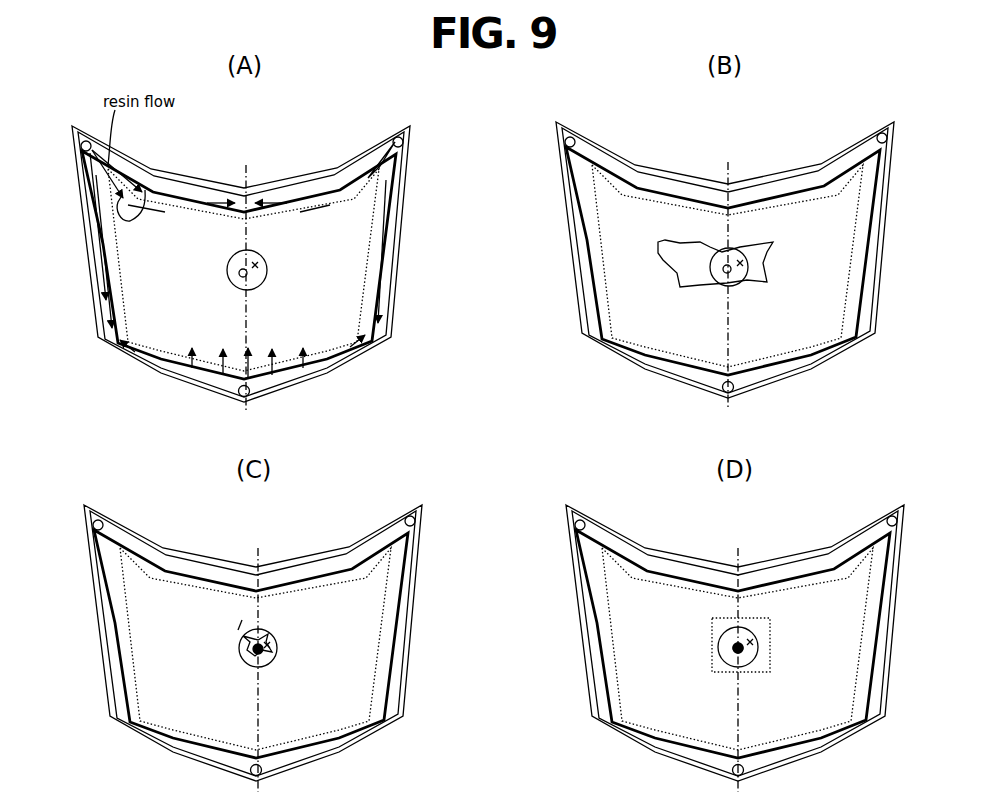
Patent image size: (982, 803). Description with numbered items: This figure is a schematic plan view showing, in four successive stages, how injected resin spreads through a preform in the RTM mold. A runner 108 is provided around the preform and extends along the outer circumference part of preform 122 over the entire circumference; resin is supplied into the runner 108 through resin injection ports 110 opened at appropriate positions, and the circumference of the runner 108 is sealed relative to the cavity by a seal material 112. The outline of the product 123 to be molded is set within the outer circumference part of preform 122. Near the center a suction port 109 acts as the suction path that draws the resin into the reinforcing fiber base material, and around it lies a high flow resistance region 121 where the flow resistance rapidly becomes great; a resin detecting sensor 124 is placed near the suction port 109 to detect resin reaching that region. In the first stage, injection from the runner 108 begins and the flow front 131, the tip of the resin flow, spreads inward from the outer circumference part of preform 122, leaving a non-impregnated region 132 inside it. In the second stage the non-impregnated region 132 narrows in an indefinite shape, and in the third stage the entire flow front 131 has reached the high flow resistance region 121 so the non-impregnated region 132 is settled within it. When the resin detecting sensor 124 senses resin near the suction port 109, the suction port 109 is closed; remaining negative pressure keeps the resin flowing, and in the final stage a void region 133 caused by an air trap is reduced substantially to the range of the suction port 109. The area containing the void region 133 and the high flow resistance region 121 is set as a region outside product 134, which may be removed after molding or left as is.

The runner 108 is at (388, 222).
The suction port 109 is at (239, 275).
The resin injection port 110 is at (81, 146).
The seal material 112 is at (393, 285).
The high flow resistance region 121 is at (255, 273).
The outer circumference part of preform 122 is at (350, 347).
The outline of the product 123 is at (615, 330).
The resin detecting sensor 124 is at (252, 262).
The flow front 131 is at (673, 238).
The non-impregnated region 132 is at (708, 150).
The void region 133 is at (735, 645).
The region outside product 134 is at (712, 652).